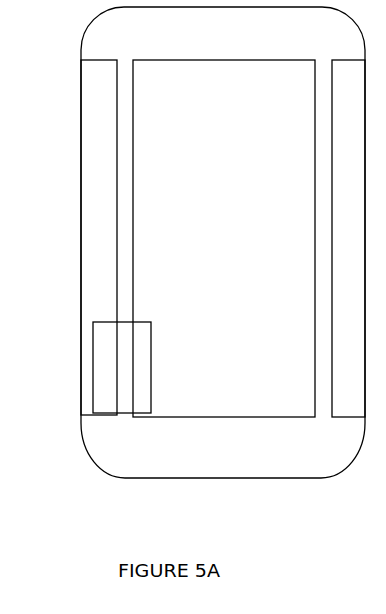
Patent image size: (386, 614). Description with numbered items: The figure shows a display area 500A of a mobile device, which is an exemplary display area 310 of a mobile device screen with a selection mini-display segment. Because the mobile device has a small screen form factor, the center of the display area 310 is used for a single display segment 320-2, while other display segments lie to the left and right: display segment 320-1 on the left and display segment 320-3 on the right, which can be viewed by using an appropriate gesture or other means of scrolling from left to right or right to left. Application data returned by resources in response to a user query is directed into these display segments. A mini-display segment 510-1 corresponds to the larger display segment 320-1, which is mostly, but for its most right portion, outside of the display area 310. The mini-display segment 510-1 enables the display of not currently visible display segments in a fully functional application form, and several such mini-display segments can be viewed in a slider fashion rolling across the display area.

The electronic device assembly 500A is at (48, 60).
The display area 310 is at (81, 422).
The display segment 320-1 is at (93, 418).
The display segment 320-2 is at (213, 60).
The display segment 320-3 is at (348, 420).
The mini-display segment 510-1 is at (123, 320).